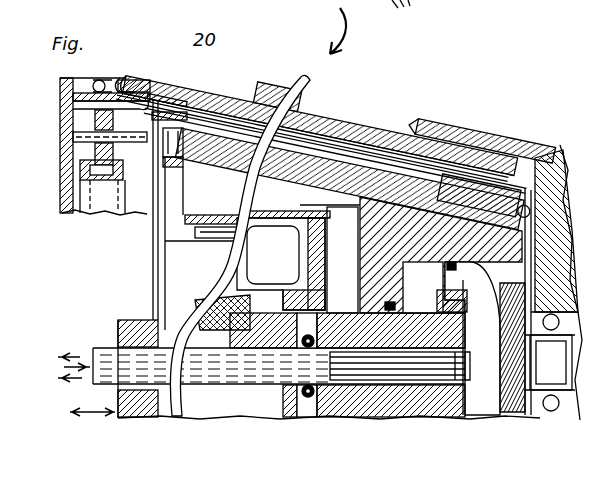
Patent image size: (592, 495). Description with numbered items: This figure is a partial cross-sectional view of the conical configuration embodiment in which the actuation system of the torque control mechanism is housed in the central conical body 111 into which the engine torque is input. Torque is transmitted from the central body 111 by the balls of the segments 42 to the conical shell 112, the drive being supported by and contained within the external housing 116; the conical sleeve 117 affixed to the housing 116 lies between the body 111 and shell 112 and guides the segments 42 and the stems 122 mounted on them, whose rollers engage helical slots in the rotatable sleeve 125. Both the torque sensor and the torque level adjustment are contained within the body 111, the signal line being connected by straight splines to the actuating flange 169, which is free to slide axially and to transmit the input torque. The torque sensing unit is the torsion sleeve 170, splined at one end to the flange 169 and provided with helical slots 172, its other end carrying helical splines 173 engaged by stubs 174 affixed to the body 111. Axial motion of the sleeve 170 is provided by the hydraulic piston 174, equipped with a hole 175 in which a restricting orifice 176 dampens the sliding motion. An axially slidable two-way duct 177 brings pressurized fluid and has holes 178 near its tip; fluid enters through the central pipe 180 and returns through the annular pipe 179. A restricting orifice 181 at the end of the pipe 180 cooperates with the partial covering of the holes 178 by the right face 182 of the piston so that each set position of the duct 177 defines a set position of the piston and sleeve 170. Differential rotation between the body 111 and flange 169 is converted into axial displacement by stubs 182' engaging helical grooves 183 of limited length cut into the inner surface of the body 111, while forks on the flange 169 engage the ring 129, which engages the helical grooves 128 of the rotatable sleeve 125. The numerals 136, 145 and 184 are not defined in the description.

The segment 42 is at (408, 160).
The central conical body 111 is at (232, 100).
The conical shell 112 is at (276, 100).
The external housing 116 is at (515, 135).
The conical sleeve 117 is at (230, 146).
The stem 122 is at (547, 10).
The rotatable sleeve 125 is at (118, 92).
The helical grooves 128 is at (135, 90).
The ring 129 is at (143, 168).
The member 136 is at (430, 2).
The member 145 is at (490, 6).
The actuating flange 169 is at (134, 318).
The torsion sleeve 170 is at (232, 212).
The helical slots 172 is at (246, 250).
The helical splines 173 is at (342, 275).
The stub 174 is at (322, 120).
The hole 175 is at (458, 290).
The restricting orifice 176 is at (447, 288).
The two-way duct 177 is at (197, 410).
The holes 178 is at (476, 405).
The annular pipe 179 is at (385, 415).
The central pipe 180 is at (417, 357).
The restricting orifice 181 is at (495, 370).
The right face of piston 182 is at (337, 261).
The stubs 182' is at (193, 81).
The helical grooves 183 is at (178, 160).
The housing 184 is at (108, 215).